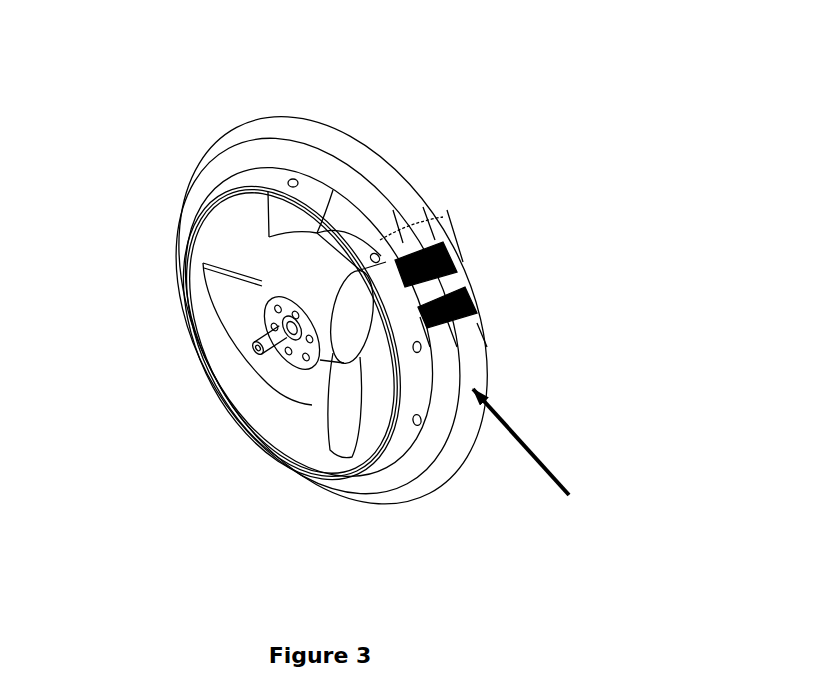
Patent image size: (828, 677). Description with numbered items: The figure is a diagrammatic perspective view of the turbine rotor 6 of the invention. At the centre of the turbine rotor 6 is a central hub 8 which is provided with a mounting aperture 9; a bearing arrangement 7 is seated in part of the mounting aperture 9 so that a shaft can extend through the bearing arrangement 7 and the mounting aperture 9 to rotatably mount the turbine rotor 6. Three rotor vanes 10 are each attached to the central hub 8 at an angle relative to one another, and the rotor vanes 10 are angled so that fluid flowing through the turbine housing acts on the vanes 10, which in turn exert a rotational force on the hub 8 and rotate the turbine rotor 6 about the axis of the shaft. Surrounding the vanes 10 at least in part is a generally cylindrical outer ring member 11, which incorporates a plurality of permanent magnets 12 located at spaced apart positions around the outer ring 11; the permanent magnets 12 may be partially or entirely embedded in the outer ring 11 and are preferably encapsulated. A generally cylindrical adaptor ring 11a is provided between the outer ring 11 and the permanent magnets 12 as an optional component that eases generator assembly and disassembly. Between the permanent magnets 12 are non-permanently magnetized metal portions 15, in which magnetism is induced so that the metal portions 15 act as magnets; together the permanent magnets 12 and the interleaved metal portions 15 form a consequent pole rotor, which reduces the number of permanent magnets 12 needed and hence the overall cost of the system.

The turbine rotor 6 is at (505, 273).
The bearing arrangement 7 is at (277, 306).
The central hub 8 is at (280, 294).
The mounting aperture 9 is at (297, 350).
The rotor vanes 10 is at (352, 289).
The outer ring member 11 is at (240, 400).
The adaptor ring 11a is at (368, 463).
The permanent magnets 12 is at (428, 285).
The non-permanently magnetized metal portion 15 is at (421, 237).